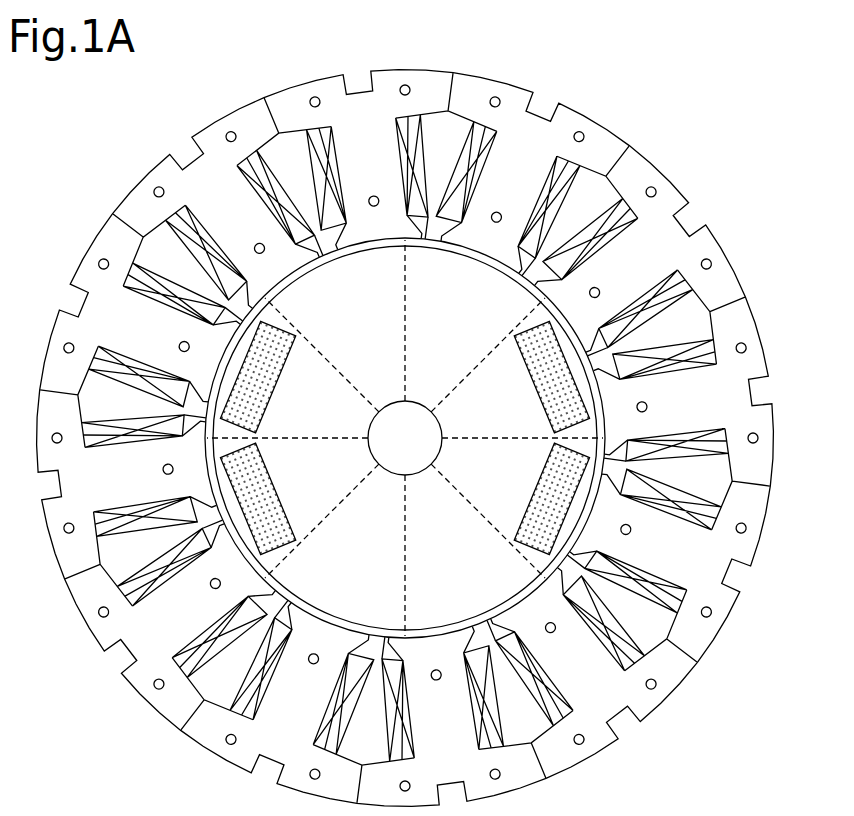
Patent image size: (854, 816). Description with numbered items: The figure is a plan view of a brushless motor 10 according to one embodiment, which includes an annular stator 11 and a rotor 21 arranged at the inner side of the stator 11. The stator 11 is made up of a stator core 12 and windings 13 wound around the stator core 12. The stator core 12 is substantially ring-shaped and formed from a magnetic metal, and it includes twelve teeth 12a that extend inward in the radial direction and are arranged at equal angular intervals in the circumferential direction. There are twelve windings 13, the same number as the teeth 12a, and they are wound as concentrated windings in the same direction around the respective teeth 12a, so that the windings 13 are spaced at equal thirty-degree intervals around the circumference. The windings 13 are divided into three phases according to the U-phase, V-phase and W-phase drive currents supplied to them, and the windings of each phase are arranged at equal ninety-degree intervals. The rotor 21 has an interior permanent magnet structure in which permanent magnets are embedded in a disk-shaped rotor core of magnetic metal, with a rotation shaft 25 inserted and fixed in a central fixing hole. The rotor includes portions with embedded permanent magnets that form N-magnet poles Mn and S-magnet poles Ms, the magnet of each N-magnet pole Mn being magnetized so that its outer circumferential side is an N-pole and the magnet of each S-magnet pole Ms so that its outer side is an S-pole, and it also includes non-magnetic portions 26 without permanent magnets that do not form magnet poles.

The motor 10 is at (704, 118).
The stator 11 is at (682, 178).
The stator core 12 is at (604, 140).
The teeth 12a is at (413, 117).
The windings 13 is at (313, 130).
The rotor 21 is at (575, 326).
The rotation shaft 25 is at (421, 470).
The non-magnetic portions 26 is at (433, 216).
The S-magnet poles Ms is at (597, 354).
The N-magnet poles Mn is at (655, 488).